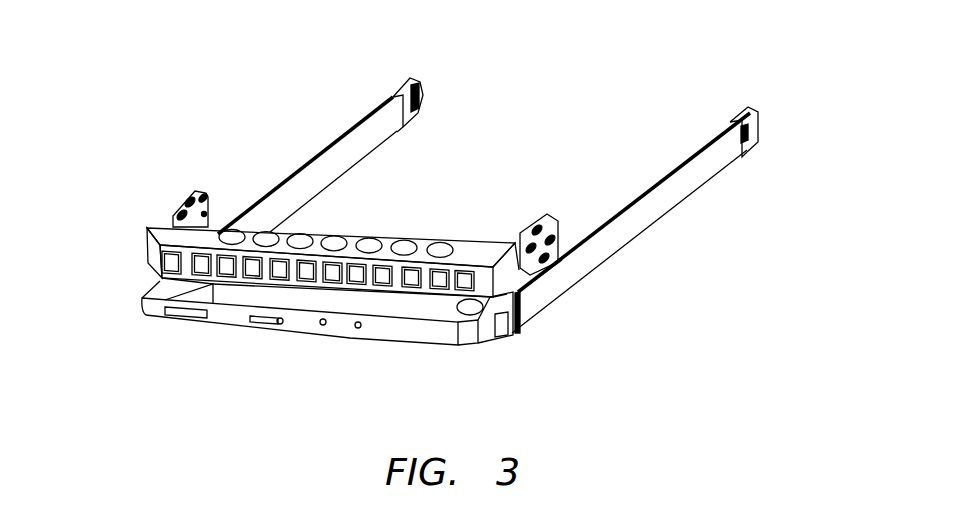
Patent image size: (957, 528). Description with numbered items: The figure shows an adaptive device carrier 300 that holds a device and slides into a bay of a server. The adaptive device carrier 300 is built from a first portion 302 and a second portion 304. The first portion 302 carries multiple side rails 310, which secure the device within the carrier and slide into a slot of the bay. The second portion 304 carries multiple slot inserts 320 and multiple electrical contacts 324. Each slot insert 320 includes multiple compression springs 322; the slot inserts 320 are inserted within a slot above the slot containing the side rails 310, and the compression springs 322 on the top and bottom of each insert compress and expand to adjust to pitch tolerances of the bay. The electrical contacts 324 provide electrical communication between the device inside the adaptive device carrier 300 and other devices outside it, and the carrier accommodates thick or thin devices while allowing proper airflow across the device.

The adaptive device carrier 300 is at (641, 67).
The first portion 302 is at (406, 334).
The second portion 304 is at (140, 257).
The side rails 310 is at (322, 152).
The slot inserts 320 is at (152, 216).
The compression springs 322 is at (192, 196).
The electrical contacts 324 is at (333, 243).